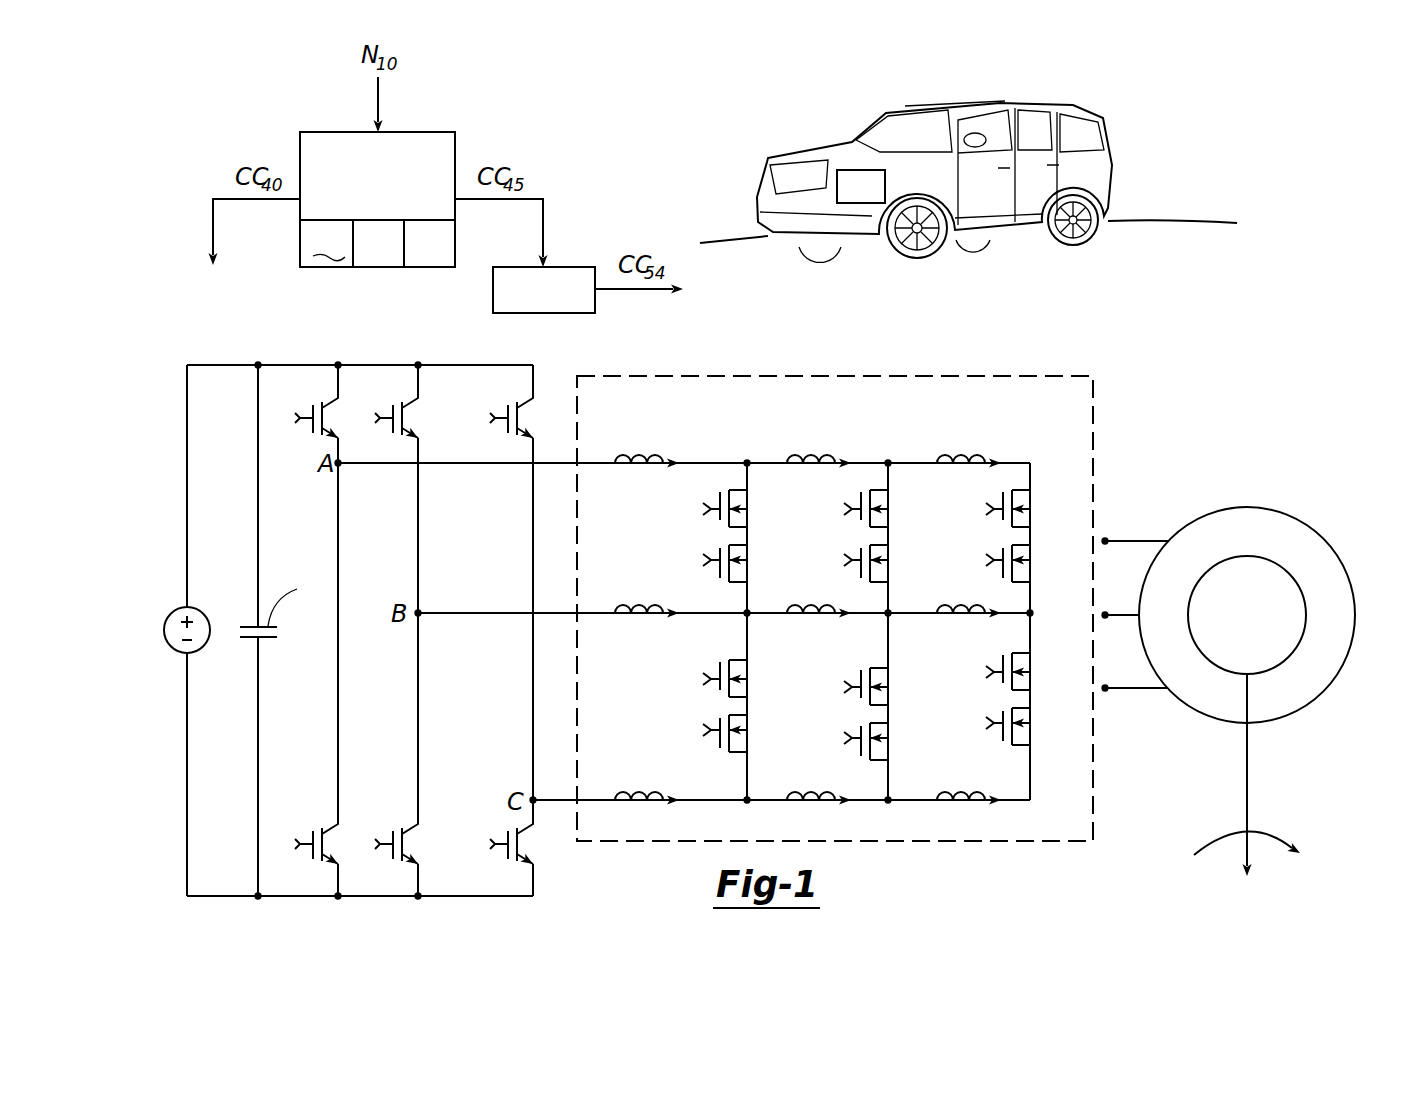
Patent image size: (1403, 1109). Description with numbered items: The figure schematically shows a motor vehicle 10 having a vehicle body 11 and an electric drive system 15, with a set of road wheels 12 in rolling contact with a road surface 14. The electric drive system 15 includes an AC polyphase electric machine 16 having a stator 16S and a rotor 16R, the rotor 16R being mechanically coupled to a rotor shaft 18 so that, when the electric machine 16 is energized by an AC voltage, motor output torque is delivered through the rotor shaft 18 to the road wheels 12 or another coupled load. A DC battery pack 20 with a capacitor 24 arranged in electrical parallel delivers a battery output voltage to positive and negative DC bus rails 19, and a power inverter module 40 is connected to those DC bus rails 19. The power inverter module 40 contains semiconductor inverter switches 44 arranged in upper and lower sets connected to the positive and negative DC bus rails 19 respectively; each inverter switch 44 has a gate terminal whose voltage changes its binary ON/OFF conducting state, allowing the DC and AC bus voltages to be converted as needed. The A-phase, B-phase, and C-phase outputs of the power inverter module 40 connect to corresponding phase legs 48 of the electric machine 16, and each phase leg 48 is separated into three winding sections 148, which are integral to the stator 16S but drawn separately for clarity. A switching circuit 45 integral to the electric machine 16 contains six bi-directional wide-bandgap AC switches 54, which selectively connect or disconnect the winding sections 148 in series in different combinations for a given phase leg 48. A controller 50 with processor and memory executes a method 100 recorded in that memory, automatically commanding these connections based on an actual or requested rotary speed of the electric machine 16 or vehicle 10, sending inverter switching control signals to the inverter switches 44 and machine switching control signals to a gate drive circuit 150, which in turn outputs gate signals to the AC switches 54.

The vehicle 10 is at (1097, 86).
The vehicle body 11 is at (1097, 121).
The road wheels 12 is at (918, 258).
The road surface 14 is at (1172, 235).
The electric drive system 15 is at (1097, 336).
The electric machine 16 is at (1258, 603).
The rotor 16R is at (1290, 655).
The stator 16S is at (1195, 690).
The rotor shaft 18 is at (1250, 786).
The DC bus rails 19 is at (213, 363).
The battery pack 20 is at (163, 630).
The capacitor 24 is at (278, 652).
The power inverter module 40 is at (395, 661).
The inverter switches 44 is at (309, 398).
The switching circuit 45 is at (835, 642).
The phase legs 48 is at (1119, 394).
The controller 50 is at (455, 148).
The AC switches 54 is at (692, 504).
The method 100 is at (329, 244).
The winding sections 148 is at (678, 449).
The gate drive circuit 150 is at (583, 267).